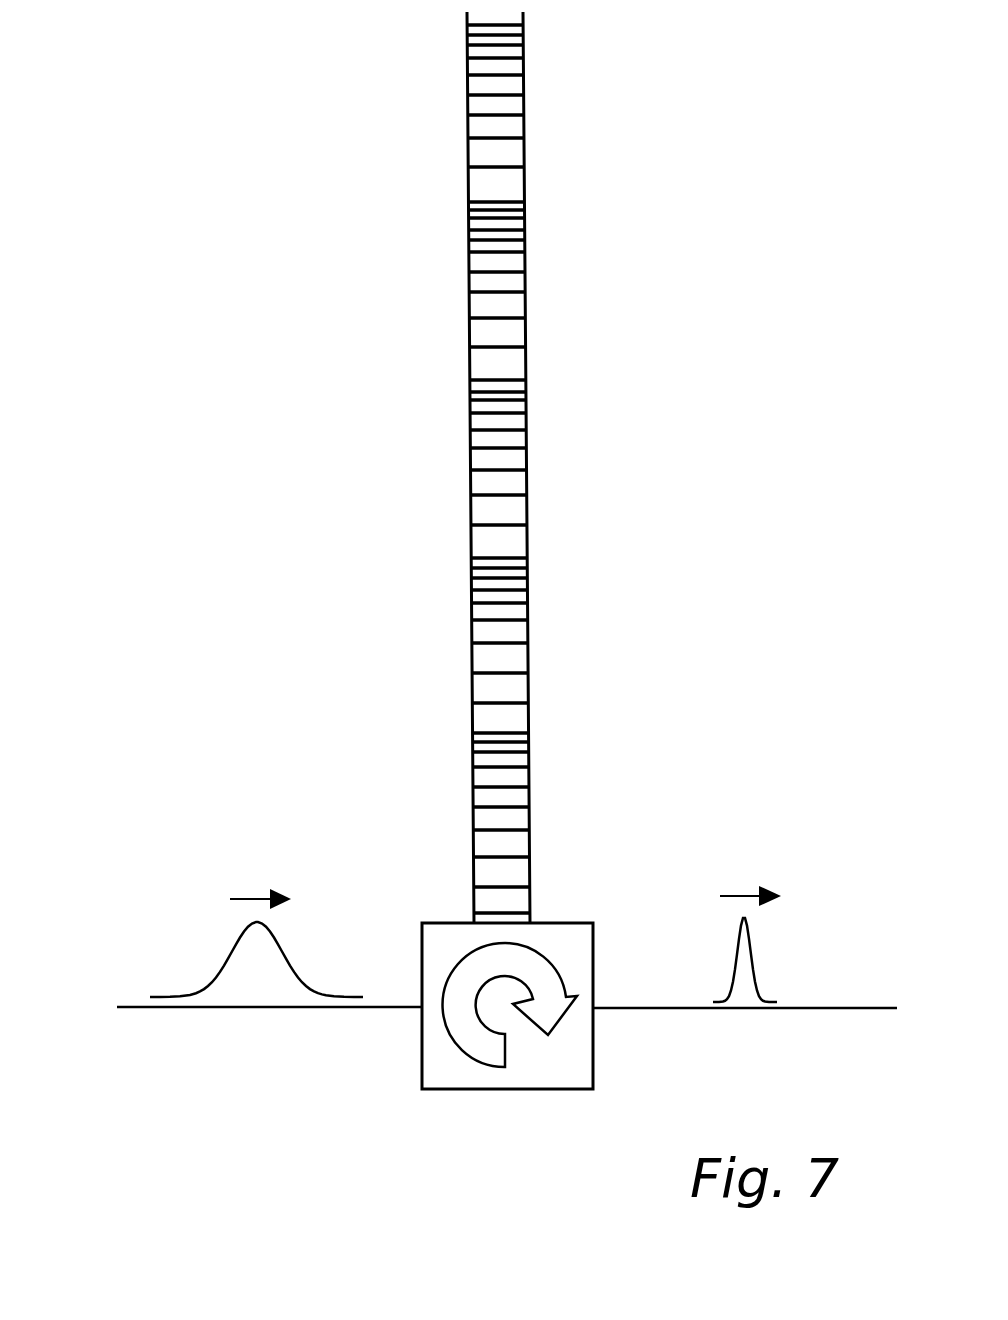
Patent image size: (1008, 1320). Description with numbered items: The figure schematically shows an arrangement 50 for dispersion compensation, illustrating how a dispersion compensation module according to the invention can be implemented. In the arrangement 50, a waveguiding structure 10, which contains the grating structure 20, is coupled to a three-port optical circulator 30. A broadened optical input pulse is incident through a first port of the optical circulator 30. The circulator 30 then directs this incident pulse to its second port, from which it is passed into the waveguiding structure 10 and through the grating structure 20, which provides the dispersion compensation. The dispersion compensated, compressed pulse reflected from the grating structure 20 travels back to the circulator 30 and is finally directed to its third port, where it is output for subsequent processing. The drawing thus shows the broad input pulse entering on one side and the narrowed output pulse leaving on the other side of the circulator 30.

The waveguiding structure 10 is at (528, 545).
The grating structure 20 is at (498, 340).
The three-port optical circulator 30 is at (460, 1090).
The arrangement 50 is at (203, 258).